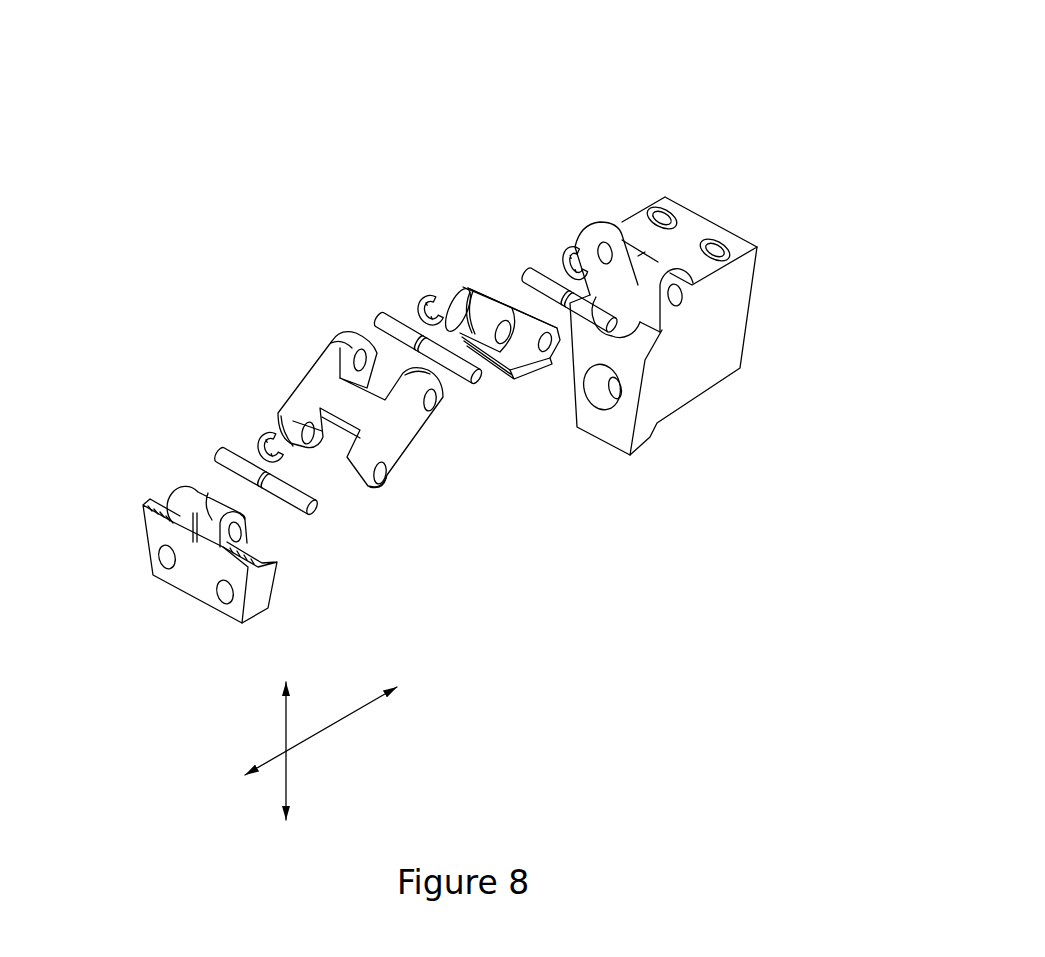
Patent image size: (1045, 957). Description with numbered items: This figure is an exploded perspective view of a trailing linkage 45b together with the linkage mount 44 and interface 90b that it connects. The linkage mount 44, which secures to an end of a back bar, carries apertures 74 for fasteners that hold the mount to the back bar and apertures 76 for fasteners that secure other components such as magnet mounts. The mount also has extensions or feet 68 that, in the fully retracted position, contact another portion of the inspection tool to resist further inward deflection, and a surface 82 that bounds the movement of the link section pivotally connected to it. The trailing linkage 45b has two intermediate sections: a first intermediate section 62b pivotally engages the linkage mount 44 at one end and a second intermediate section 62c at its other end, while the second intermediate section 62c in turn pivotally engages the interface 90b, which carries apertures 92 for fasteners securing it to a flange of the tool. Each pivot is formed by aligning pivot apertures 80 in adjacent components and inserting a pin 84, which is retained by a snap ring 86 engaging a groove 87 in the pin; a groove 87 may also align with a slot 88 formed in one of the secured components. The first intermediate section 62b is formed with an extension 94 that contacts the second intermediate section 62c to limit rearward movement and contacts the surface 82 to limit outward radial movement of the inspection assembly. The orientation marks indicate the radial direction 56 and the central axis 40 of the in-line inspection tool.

The trailing linkage 45b is at (207, 90).
The linkage mount 44 is at (737, 308).
The apertures 76 is at (677, 213).
The apertures 74 is at (623, 402).
The extensions or feet 68 is at (635, 457).
The first intermediate section 62b is at (490, 292).
The second intermediate section 62c is at (302, 378).
The extension 94 is at (496, 372).
The pivot apertures 80 is at (677, 307).
The surface 82 is at (631, 258).
The pin 84 is at (528, 268).
The snap ring 86 is at (575, 255).
The groove 87 is at (418, 343).
The slot 88 is at (471, 295).
The interface 90b is at (147, 540).
The apertures 92 is at (217, 607).
The radial direction 56 is at (285, 740).
The central axis 40 is at (323, 728).